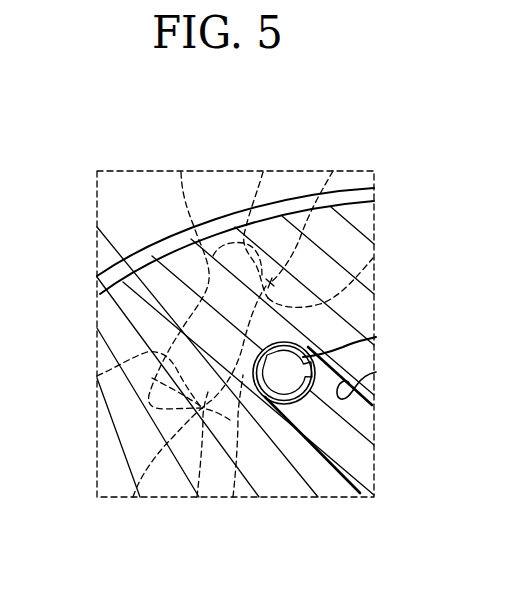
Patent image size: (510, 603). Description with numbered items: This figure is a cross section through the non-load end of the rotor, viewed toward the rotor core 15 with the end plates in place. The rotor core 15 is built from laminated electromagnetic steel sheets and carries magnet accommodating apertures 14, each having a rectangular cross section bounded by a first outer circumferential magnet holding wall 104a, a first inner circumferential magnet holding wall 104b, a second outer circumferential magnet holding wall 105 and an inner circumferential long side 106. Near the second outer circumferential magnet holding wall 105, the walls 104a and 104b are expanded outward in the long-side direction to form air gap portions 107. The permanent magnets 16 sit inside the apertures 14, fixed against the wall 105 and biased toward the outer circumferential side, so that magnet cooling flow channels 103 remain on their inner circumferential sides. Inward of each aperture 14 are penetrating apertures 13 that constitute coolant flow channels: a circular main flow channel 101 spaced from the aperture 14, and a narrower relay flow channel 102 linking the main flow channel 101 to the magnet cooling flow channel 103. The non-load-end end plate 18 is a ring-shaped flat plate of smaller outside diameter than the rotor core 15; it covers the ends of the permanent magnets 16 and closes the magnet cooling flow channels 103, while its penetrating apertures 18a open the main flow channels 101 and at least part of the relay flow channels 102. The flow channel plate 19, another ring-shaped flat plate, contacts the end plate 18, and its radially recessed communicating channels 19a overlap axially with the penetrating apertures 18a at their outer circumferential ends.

The penetrating apertures 13 is at (241, 454).
The magnet accommodating apertures 14 is at (333, 171).
The rotor core 15 is at (152, 241).
The permanent magnets 16 is at (181, 172).
The non-load-end end plate 18 is at (350, 417).
The penetrating apertures 18a is at (376, 337).
The flow channel plate 19 is at (110, 267).
The communicating channels 19a is at (376, 372).
The main flow channels 101 is at (287, 371).
The relay flow channels 102 is at (233, 497).
The magnet cooling flow channels 103 is at (189, 466).
The first outer circumferential magnet holding wall 104a is at (375, 220).
The first inner circumferential magnet holding wall 104b is at (133, 497).
The second outer circumferential magnet holding wall 105 is at (97, 376).
The inner circumferential long side 106 is at (373, 258).
The air gap portions 107 is at (263, 172).